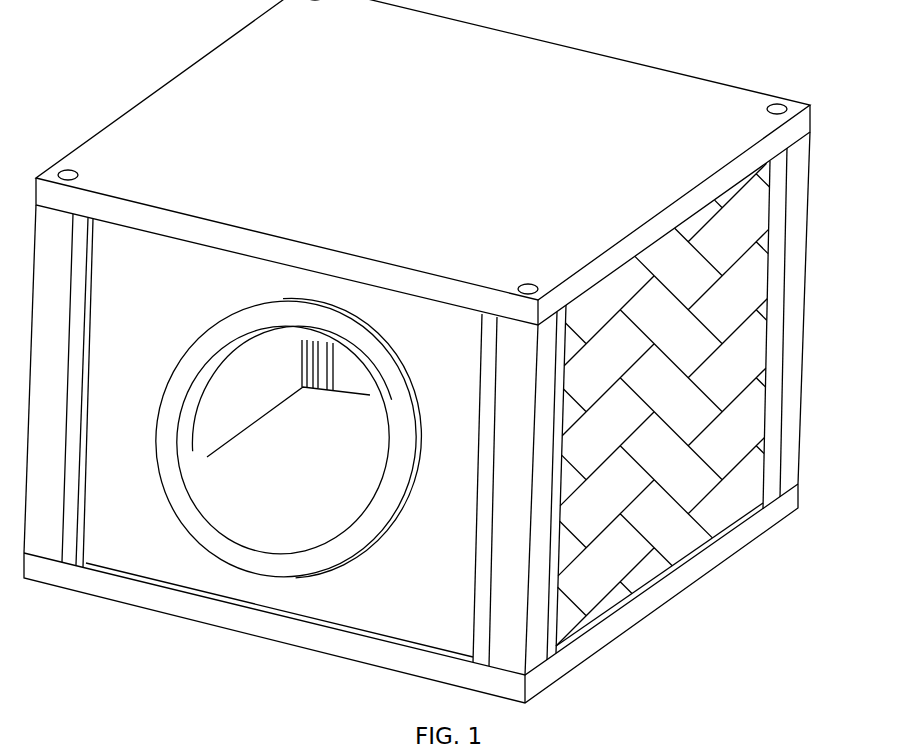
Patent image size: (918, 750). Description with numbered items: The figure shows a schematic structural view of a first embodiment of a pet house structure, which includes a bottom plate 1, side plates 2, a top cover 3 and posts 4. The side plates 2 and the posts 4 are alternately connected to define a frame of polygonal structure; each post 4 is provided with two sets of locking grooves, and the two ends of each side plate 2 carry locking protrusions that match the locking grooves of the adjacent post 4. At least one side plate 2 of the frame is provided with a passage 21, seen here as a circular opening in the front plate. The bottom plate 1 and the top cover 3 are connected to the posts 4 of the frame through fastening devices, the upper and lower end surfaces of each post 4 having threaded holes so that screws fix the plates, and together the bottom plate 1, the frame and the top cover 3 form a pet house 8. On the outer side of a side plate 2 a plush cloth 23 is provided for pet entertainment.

The bottom plate 1 is at (415, 663).
The side plate 2 is at (108, 543).
The passage 21 is at (272, 445).
The top cover 3 is at (548, 117).
The post 4 is at (510, 578).
The plush cloth 23 is at (655, 450).
The pet house 8 is at (812, 440).